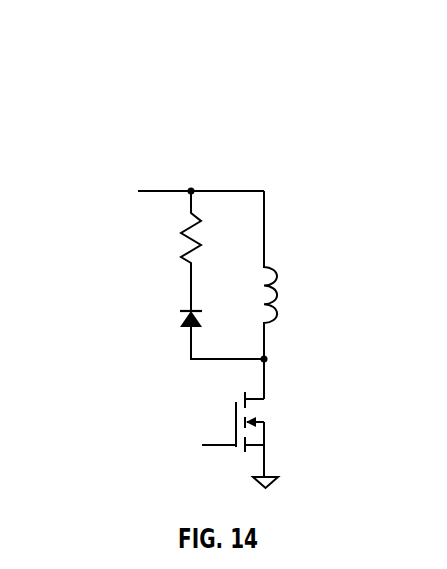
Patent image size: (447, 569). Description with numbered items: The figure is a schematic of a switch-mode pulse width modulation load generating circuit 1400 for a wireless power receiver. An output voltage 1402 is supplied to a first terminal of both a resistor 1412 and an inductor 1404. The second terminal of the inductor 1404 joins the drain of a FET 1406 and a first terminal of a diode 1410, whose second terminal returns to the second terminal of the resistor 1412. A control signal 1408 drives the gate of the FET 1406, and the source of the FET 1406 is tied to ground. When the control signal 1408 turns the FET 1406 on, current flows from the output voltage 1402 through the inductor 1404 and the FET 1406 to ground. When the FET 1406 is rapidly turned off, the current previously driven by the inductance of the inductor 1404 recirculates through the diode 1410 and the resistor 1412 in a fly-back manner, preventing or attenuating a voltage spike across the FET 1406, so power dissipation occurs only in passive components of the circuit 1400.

The switch-mode pulse width modulation load generating circuit 1400 is at (105, 132).
The voltage Vout 1402 is at (127, 175).
The inductor 1404 is at (293, 267).
The FET 1406 is at (292, 403).
The control signal 1408 is at (158, 430).
The diode 1410 is at (152, 302).
The resistor 1412 is at (182, 257).